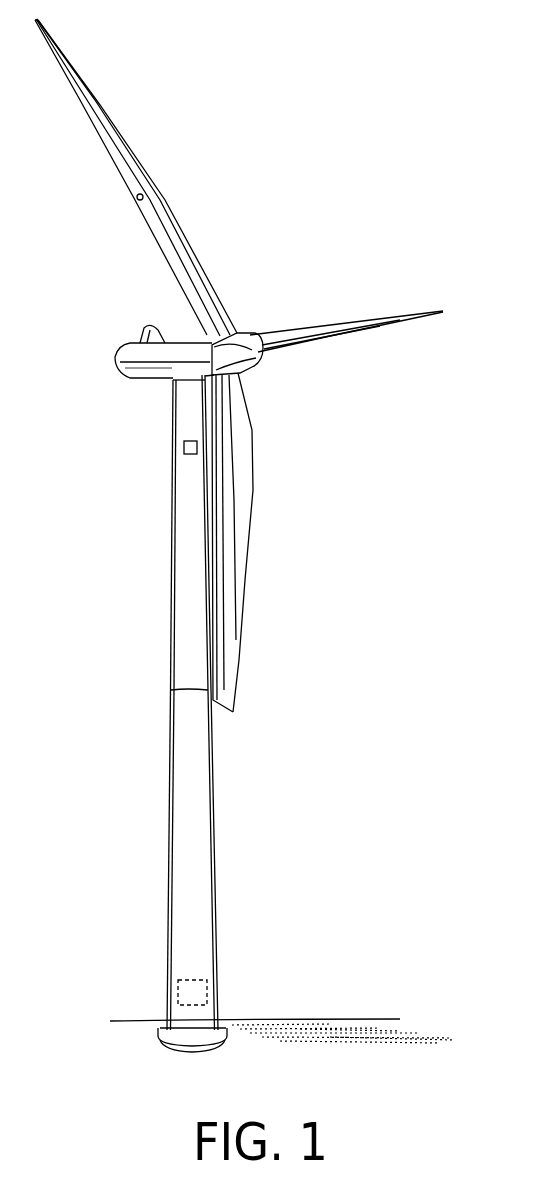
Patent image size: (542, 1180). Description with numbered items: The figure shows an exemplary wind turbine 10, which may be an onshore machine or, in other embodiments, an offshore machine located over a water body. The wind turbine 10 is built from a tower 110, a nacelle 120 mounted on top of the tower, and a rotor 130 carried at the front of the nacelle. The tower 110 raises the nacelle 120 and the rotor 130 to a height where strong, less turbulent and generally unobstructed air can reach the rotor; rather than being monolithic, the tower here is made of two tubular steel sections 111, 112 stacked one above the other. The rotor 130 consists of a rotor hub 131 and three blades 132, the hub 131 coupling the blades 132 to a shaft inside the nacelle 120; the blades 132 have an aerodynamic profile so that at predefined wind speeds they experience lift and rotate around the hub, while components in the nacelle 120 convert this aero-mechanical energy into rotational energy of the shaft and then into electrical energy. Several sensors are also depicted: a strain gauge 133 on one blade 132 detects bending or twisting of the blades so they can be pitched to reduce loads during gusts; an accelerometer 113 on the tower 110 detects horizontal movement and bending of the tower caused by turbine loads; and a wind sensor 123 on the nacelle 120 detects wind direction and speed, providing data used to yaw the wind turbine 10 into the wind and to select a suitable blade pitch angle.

The wind turbine 10 is at (376, 216).
The tower 110 is at (171, 582).
The tubular steel section 111 is at (171, 858).
The tubular steel section 112 is at (176, 520).
The accelerometer 113 is at (183, 448).
The nacelle 120 is at (113, 360).
The wind sensor 123 is at (143, 330).
The rotor 130 is at (248, 357).
The rotor hub 131 is at (242, 333).
The blade 132 is at (78, 97).
The strain gauge 133 is at (137, 197).